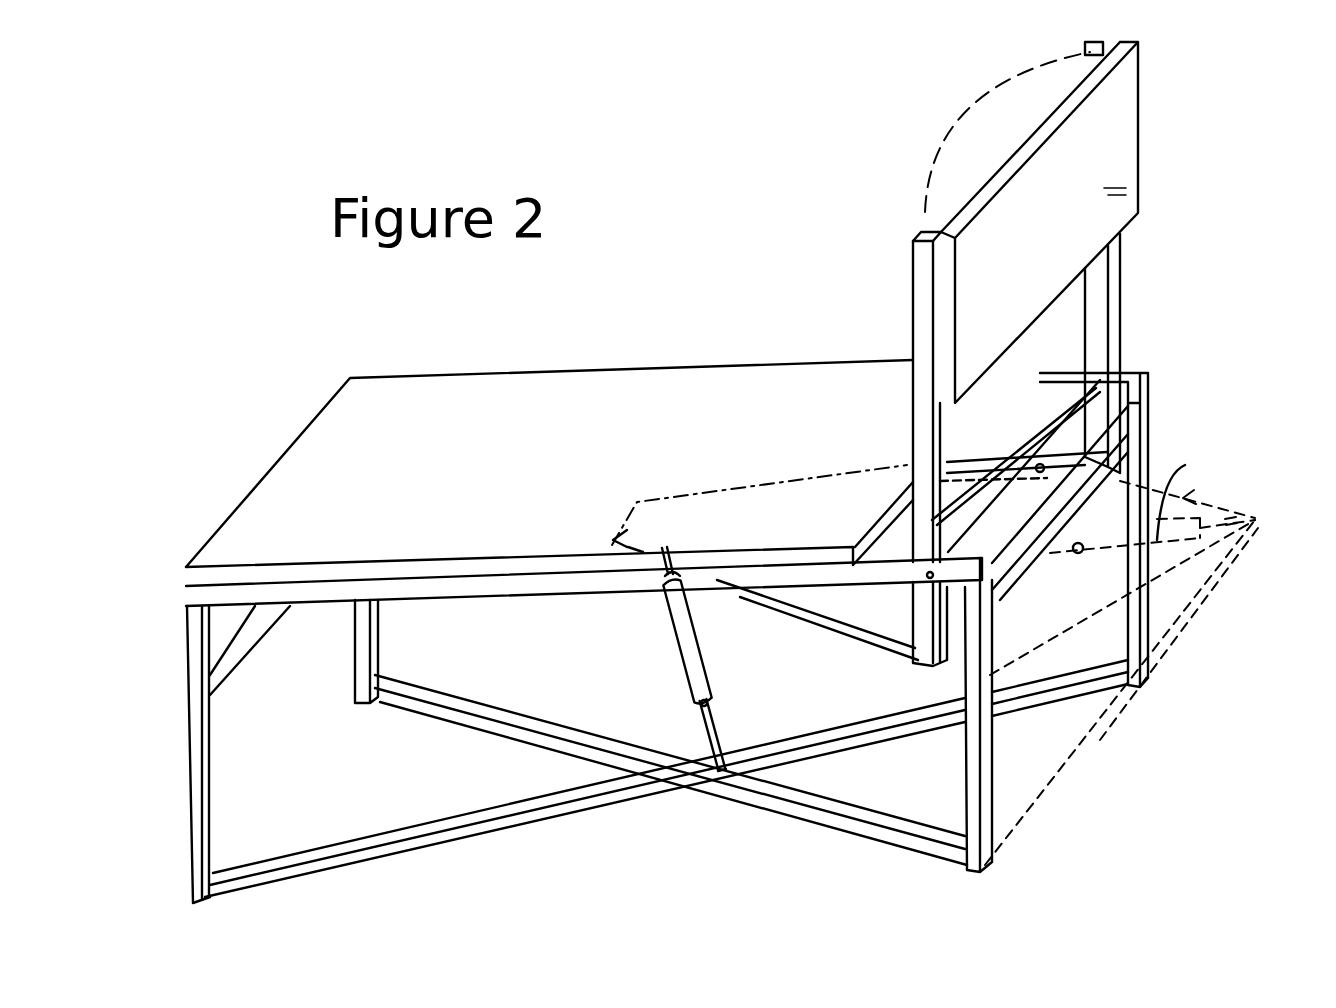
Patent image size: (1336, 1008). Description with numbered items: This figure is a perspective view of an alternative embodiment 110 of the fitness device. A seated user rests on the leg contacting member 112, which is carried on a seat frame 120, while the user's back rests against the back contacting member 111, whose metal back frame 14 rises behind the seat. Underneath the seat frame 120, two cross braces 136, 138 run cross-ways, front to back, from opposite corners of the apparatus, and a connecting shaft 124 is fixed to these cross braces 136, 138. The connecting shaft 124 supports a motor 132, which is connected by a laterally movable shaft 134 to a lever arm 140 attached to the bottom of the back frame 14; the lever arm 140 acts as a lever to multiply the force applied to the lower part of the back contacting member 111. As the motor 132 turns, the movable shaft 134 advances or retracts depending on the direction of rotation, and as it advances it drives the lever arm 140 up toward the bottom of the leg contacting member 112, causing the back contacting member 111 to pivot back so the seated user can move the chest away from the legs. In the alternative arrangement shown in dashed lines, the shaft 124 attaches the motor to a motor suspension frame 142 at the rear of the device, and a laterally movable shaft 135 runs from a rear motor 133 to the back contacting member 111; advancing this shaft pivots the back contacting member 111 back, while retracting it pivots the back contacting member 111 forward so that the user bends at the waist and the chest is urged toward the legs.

The alternative embodiment 110 is at (783, 285).
The back contacting member 111 is at (1134, 145).
The back frame 14 is at (1117, 310).
The leg contacting member 112 is at (644, 437).
The seat frame 120 is at (332, 592).
The connecting shaft 124 is at (719, 726).
The motor 132 is at (683, 640).
The motor 133 is at (1192, 489).
The laterally movable shaft 134 is at (652, 518).
The laterally movable shaft 135 is at (1062, 553).
The cross brace 136 is at (478, 826).
The cross brace 138 is at (767, 806).
The lever arm 140 is at (798, 606).
The motor suspension frame 142 is at (1188, 500).